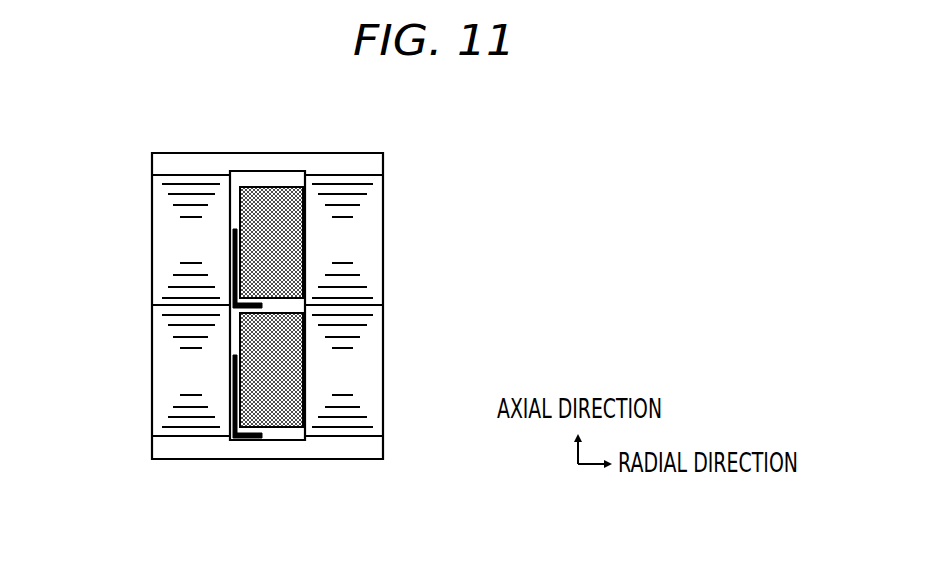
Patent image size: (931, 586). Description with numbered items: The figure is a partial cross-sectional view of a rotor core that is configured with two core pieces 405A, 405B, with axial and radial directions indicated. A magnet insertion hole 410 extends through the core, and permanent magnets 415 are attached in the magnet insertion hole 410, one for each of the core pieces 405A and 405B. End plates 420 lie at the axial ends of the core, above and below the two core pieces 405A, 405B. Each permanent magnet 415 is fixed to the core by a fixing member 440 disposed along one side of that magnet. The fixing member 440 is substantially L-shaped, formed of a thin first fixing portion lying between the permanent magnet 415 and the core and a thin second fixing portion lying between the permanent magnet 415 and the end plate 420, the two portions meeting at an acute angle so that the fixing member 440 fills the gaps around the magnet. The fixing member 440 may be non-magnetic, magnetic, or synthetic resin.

The core piece 405A is at (377, 282).
The core piece 405B is at (377, 410).
The magnet insertion hole 410 is at (240, 181).
The permanent magnet 415 is at (279, 191).
The end plate 420 is at (377, 163).
The fixing member 440 is at (236, 237).